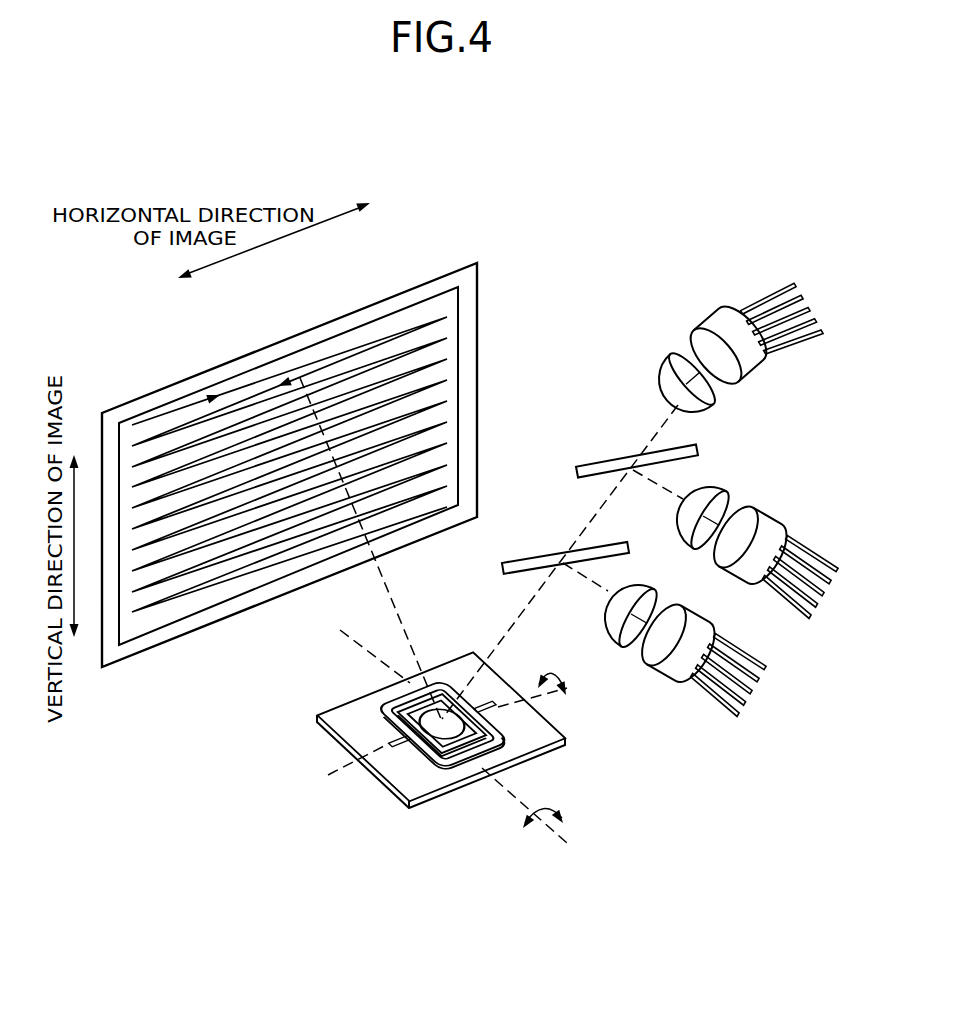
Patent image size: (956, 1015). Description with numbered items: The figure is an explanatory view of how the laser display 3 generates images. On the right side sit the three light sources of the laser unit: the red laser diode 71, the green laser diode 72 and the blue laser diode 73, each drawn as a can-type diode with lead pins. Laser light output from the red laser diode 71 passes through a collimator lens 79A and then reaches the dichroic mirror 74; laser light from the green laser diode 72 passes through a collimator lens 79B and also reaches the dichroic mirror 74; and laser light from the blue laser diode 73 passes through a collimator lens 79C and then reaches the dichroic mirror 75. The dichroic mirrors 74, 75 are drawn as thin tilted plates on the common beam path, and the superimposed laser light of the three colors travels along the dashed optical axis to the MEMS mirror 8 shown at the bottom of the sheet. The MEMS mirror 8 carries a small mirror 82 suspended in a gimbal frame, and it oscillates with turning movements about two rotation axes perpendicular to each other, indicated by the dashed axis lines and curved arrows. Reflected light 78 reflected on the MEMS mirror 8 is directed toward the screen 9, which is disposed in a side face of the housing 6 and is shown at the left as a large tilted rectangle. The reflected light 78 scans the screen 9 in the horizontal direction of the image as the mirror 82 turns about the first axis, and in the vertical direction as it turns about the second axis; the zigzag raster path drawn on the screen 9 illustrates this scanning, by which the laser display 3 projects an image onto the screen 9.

The laser display 3 is at (513, 150).
The housing 6 is at (183, 374).
The screen 9 is at (309, 358).
The MEMS mirror 8 is at (443, 752).
The mirror 82 is at (433, 732).
The reflected light 78 is at (391, 605).
The red laser diode 71 is at (700, 319).
The green laser diode 72 is at (772, 512).
The blue laser diode 73 is at (706, 620).
The dichroic mirror 74 is at (603, 459).
The dichroic mirror 75 is at (532, 556).
The collimator lens 79A is at (733, 413).
The collimator lens 79B is at (730, 483).
The collimator lens 79C is at (611, 643).